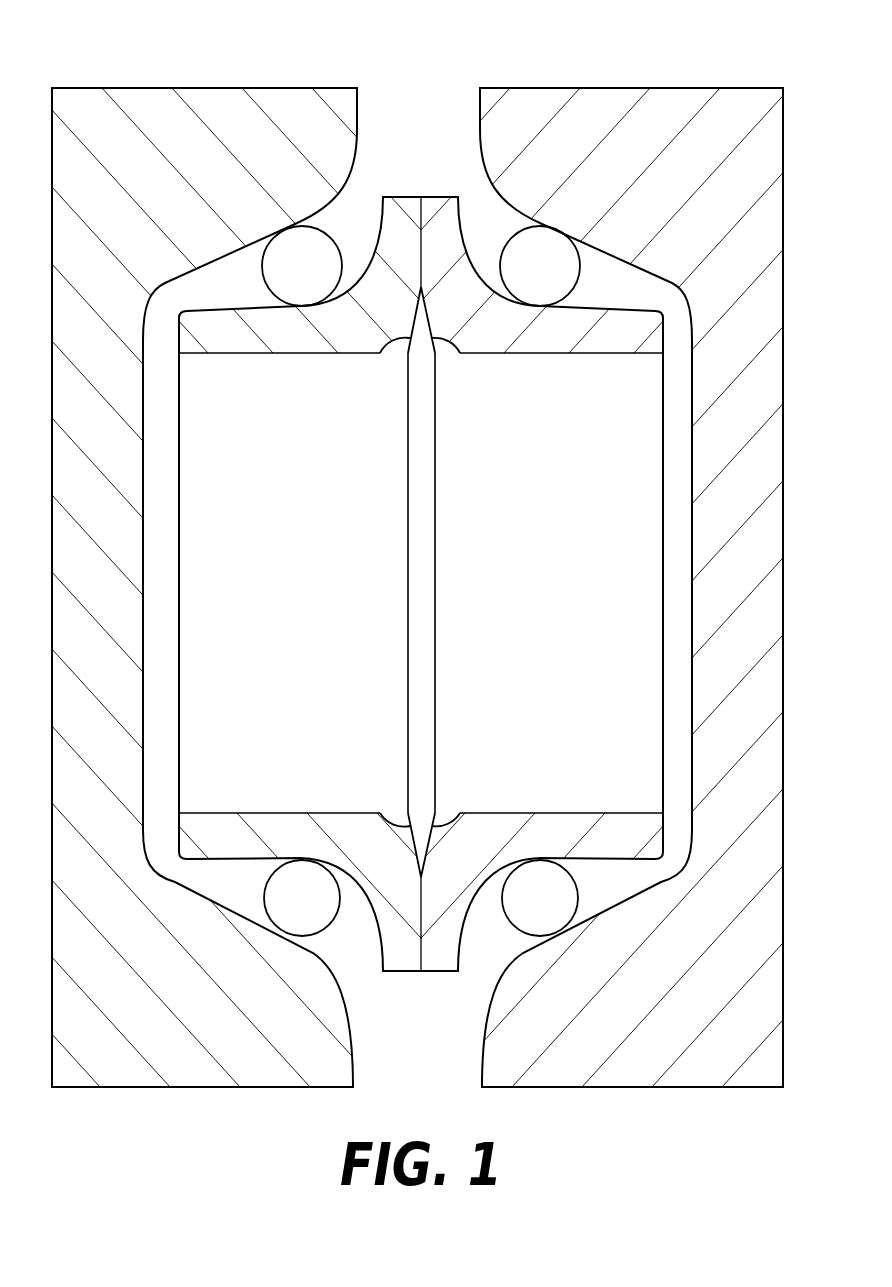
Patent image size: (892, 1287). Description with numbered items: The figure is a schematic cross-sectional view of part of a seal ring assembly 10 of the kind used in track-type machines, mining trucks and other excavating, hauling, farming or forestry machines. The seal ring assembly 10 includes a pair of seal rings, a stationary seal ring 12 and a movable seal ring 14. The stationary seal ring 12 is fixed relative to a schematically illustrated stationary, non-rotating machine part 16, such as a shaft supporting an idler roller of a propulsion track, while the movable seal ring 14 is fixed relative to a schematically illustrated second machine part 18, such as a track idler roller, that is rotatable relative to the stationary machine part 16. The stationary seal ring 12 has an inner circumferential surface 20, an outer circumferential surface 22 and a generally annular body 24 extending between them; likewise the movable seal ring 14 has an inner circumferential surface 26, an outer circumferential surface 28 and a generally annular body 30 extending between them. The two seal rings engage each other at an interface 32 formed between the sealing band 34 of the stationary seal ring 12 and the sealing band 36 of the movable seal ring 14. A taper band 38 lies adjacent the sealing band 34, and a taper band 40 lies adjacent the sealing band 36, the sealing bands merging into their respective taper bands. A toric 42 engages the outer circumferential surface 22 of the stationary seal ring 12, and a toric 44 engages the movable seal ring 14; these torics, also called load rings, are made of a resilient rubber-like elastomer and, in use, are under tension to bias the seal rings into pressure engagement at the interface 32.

The seal ring assembly 10 is at (258, 66).
The stationary seal ring 12 is at (293, 562).
The movable seal ring 14 is at (559, 545).
The stationary machine part 16 is at (186, 211).
The second machine part 18 is at (733, 137).
The inner circumferential surface 20 is at (278, 356).
The outer circumferential surface 22 is at (241, 311).
The annular body 24 is at (363, 346).
The inner circumferential surface 26 is at (565, 357).
The outer circumferential surface 28 is at (587, 310).
The annular body 30 is at (543, 351).
The interface 32 is at (418, 165).
The sealing band 34 is at (398, 196).
The sealing band 36 is at (457, 196).
The taper band 38 is at (393, 335).
The taper band 40 is at (437, 333).
The toric 42 is at (311, 279).
The toric 44 is at (554, 281).